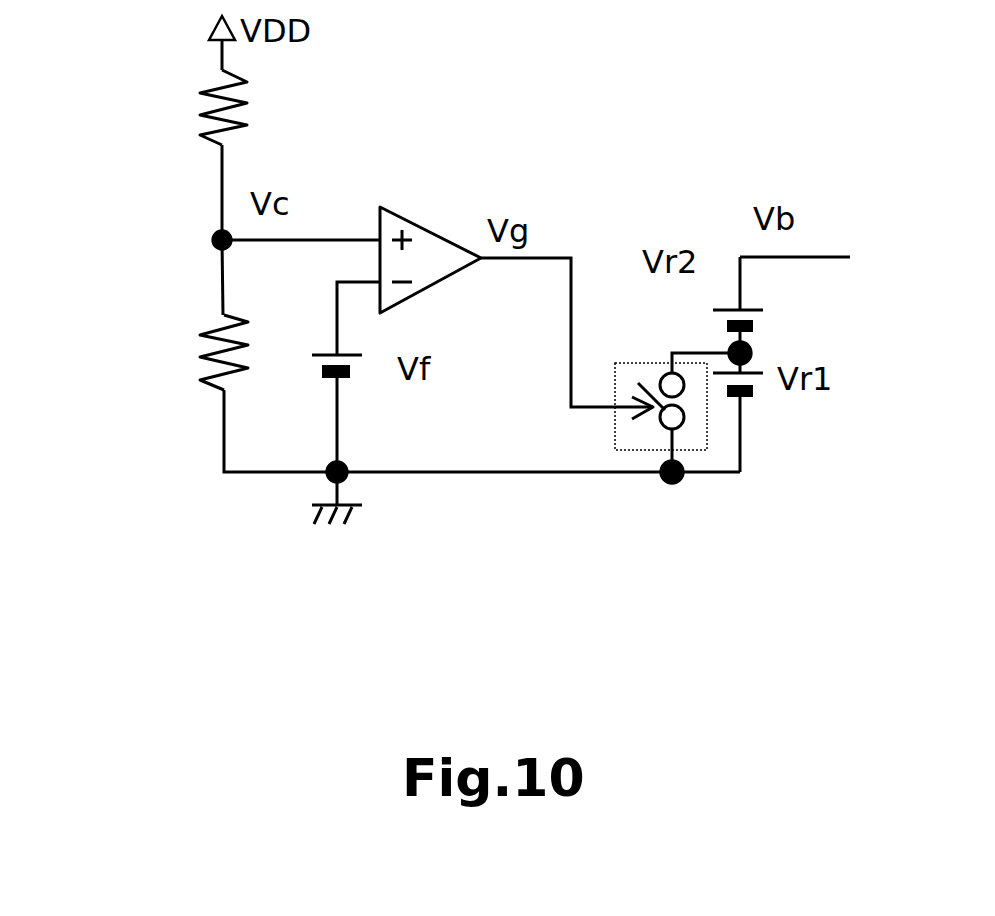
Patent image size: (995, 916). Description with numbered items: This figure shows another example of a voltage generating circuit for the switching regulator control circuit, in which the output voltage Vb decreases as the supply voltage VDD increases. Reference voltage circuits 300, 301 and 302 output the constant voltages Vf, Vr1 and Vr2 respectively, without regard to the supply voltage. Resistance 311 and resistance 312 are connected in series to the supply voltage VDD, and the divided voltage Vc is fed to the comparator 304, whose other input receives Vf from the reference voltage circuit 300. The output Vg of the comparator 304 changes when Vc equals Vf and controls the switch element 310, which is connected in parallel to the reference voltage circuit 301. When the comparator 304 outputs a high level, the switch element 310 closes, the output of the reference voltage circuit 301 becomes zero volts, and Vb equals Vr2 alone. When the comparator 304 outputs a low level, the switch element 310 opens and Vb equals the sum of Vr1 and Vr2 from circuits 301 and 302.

The resistance 311 is at (190, 113).
The resistance 312 is at (202, 346).
The comparator 304 is at (424, 218).
The reference voltage circuit 300 is at (358, 377).
The switch element 310 is at (628, 452).
The reference voltage circuit 302 is at (760, 321).
The reference voltage circuit 301 is at (760, 395).